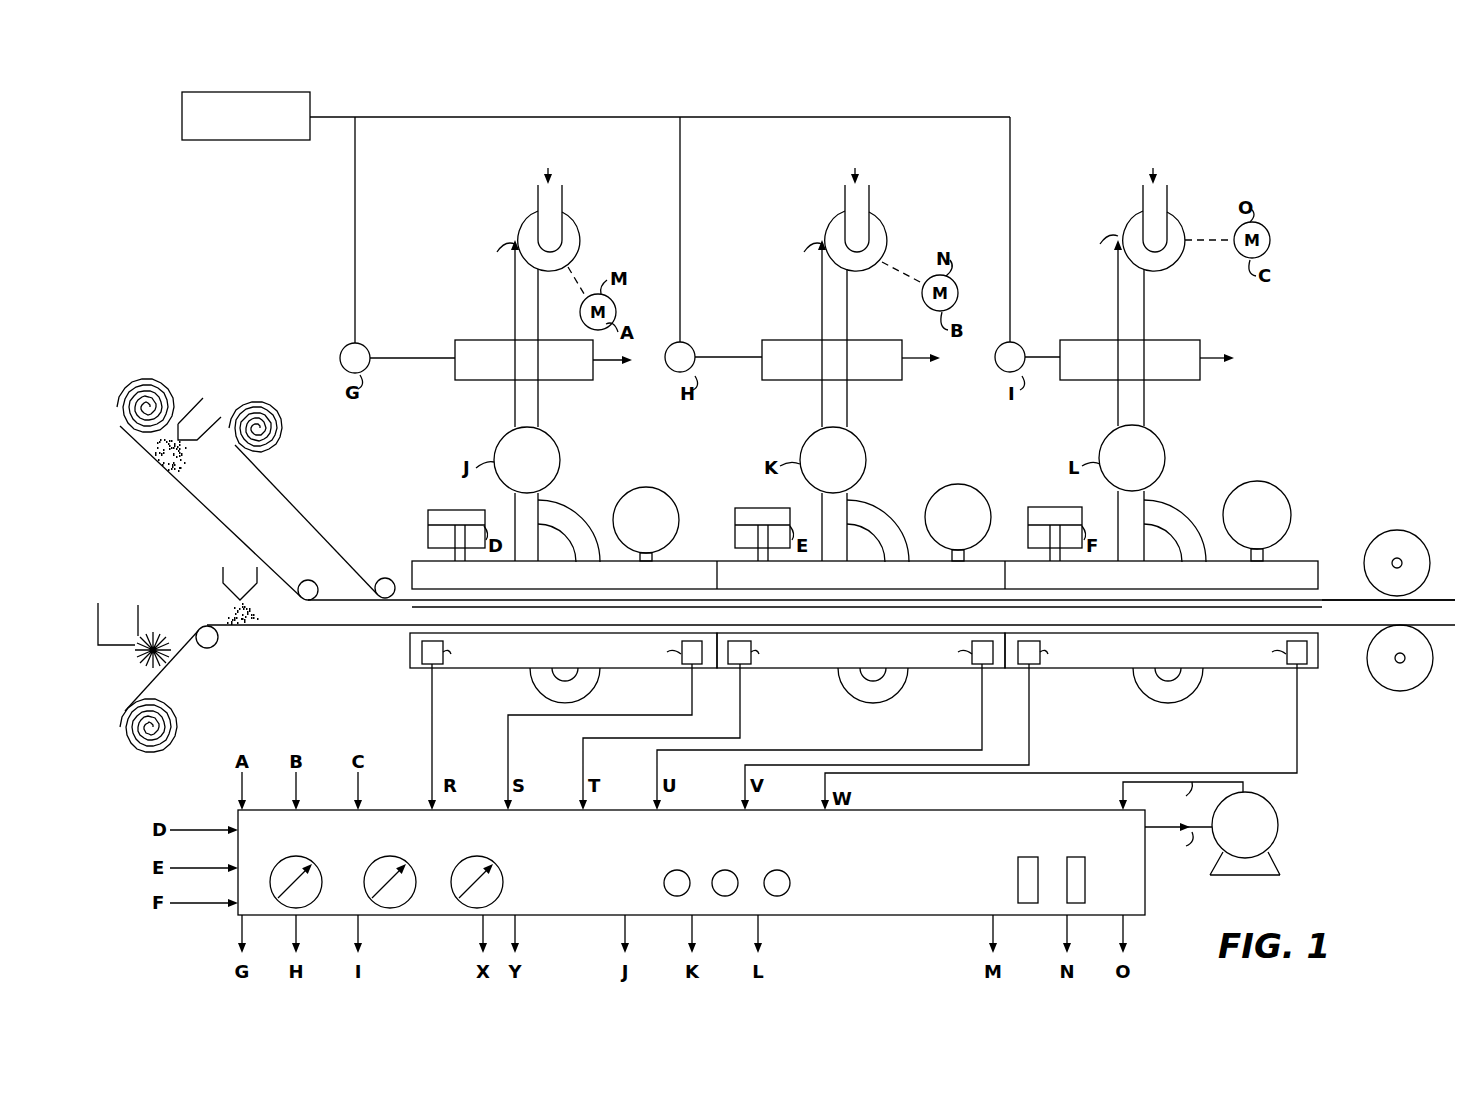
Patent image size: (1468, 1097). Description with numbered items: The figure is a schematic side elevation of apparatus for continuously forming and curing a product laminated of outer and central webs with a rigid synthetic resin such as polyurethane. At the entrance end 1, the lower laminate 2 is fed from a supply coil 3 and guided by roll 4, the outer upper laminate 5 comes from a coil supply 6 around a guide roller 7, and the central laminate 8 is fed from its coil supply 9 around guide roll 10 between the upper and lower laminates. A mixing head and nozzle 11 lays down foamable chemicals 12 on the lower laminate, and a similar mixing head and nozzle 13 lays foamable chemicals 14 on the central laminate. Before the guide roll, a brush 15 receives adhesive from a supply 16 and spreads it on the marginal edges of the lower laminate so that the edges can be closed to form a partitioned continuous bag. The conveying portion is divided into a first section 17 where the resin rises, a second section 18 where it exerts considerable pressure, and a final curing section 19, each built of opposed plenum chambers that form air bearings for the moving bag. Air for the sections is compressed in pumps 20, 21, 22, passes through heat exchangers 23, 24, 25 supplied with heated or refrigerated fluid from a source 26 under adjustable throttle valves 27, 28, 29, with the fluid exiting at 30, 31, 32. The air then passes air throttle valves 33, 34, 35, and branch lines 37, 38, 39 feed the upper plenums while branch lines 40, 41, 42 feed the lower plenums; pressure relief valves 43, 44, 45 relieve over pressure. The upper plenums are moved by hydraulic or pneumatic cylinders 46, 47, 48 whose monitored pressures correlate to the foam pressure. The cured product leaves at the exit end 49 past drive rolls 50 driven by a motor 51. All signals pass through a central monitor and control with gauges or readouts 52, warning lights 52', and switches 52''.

The entrance end 1 is at (386, 641).
The lower laminate 2 is at (166, 666).
The supply coil 3 is at (174, 725).
The guide roll 4 is at (214, 645).
The upper laminate 5 is at (304, 520).
The coil supply 6 is at (278, 418).
The guide roller 7 is at (385, 576).
The central laminate 8 is at (216, 500).
The coil supply 9 is at (152, 376).
The guide roll 10 is at (314, 583).
The mixing head and nozzle 11 is at (234, 563).
The foamable chemicals 12 is at (234, 612).
The mixing head and nozzle 13 is at (208, 406).
The foamable chemicals 14 is at (184, 480).
The brush 15 is at (138, 661).
The adhesive supply 16 is at (116, 594).
The first section 17 is at (492, 670).
The second section 18 is at (824, 670).
The final curing section 19 is at (1116, 670).
The pump 20 is at (576, 248).
The pump 21 is at (876, 248).
The pump 22 is at (1176, 234).
The heat exchanger 23 is at (500, 372).
The heat exchanger 24 is at (818, 372).
The heat exchanger 25 is at (1116, 372).
The source of heated or refrigerated fluid 26 is at (307, 101).
The adjustable throttle valve 27 is at (366, 348).
The adjustable throttle valve 28 is at (694, 348).
The adjustable throttle valve 29 is at (1021, 348).
The heat exchange fluid exit 30 is at (620, 360).
The heat exchange fluid exit 31 is at (928, 362).
The heat exchange fluid exit 32 is at (1221, 362).
The air throttle valve 33 is at (558, 470).
The air throttle valve 34 is at (867, 470).
The air throttle valve 35 is at (1164, 470).
The branch line 37 is at (588, 516).
The branch line 38 is at (902, 516).
The branch line 39 is at (1202, 516).
The branch line 40 is at (586, 694).
The branch line 41 is at (894, 700).
The branch line 42 is at (1156, 700).
The pressure relief valve 43 is at (670, 486).
The pressure relief valve 44 is at (982, 482).
The pressure relief valve 45 is at (1286, 482).
The hydraulic or pneumatic cylinder 46 is at (428, 530).
The hydraulic or pneumatic cylinder 47 is at (735, 528).
The hydraulic or pneumatic cylinder 48 is at (1030, 528).
The exit end 49 is at (1322, 544).
The drive rolls 50 is at (1374, 538).
The motor 51 is at (1278, 837).
The gauges or readouts 52 is at (691, 862).
The warning lights 52' is at (727, 868).
The switches 52'' is at (1051, 864).